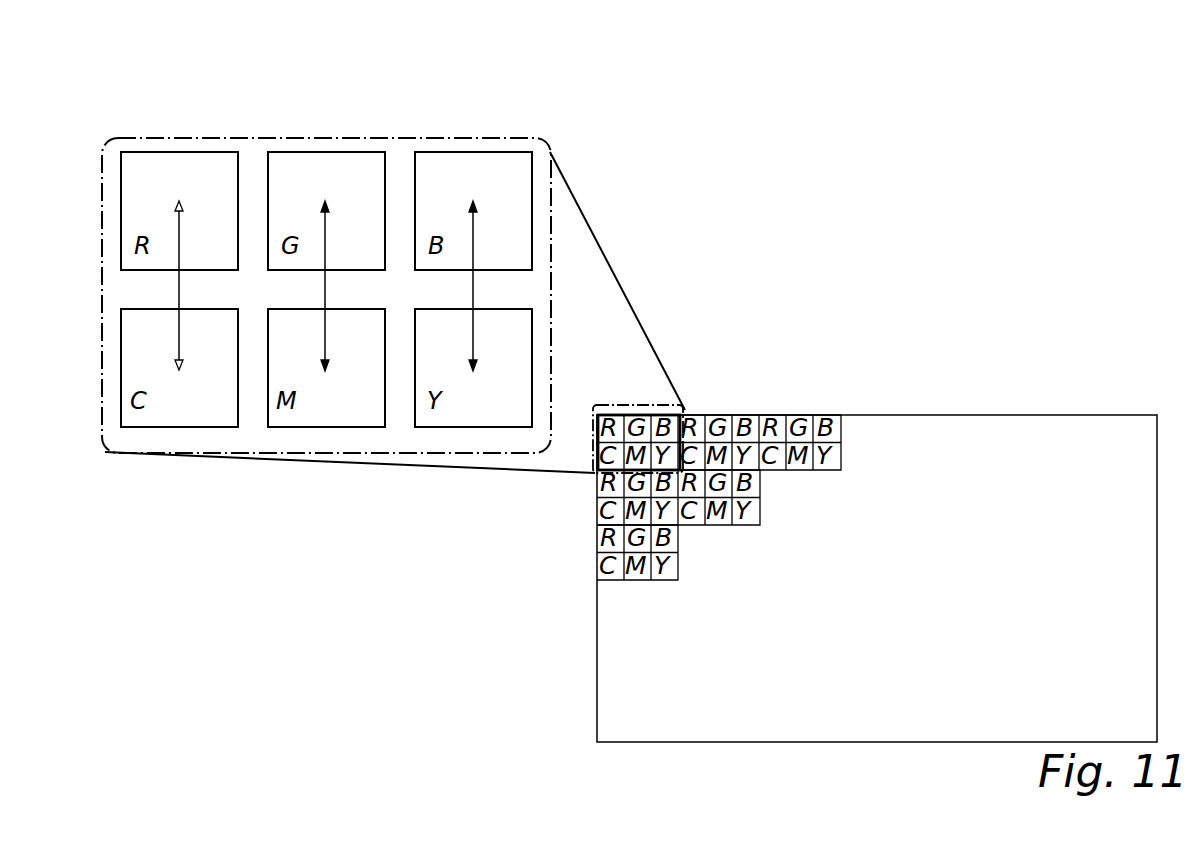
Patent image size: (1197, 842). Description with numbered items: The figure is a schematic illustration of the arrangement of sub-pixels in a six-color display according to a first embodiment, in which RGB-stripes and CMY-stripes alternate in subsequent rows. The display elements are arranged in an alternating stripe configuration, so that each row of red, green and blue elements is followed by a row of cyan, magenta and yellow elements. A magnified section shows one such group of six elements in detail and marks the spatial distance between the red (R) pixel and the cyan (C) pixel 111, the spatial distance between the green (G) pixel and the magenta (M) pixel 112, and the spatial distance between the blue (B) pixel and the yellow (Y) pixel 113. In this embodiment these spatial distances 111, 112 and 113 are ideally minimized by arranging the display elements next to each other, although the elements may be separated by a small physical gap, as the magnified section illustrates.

The spatial distance between the red and cyan pixels 111 is at (203, 285).
The spatial distance between the green and magenta pixels 112 is at (349, 286).
The spatial distance between the blue and yellow pixels 113 is at (503, 286).